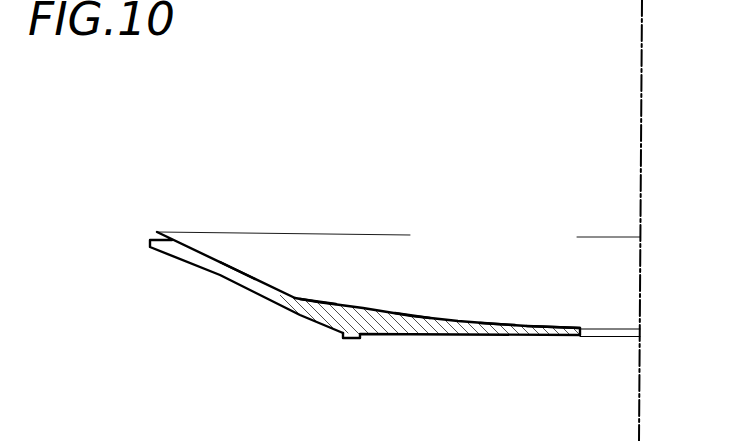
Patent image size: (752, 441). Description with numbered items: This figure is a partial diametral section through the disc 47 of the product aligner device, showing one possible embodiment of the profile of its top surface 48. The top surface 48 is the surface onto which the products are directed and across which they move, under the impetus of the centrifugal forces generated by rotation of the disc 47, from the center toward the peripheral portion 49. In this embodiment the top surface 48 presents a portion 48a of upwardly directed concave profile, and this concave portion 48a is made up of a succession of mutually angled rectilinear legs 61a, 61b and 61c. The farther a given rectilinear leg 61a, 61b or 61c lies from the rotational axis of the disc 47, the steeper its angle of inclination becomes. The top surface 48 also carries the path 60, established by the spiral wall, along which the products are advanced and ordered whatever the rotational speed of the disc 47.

The disc 47 is at (497, 323).
The top surface 48 is at (458, 321).
The portion of concave profile 48a is at (412, 316).
The peripheral portion 49 is at (187, 246).
The path 60 is at (364, 307).
The rectilinear leg 61a is at (525, 326).
The rectilinear leg 61b is at (317, 302).
The rectilinear leg 61c is at (236, 270).